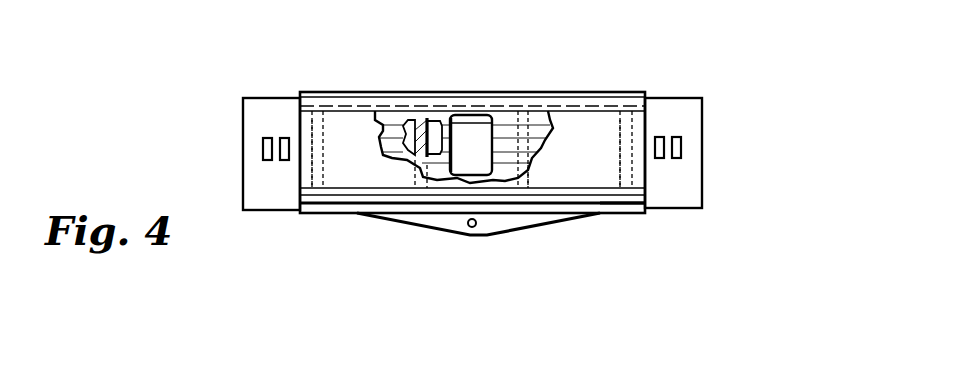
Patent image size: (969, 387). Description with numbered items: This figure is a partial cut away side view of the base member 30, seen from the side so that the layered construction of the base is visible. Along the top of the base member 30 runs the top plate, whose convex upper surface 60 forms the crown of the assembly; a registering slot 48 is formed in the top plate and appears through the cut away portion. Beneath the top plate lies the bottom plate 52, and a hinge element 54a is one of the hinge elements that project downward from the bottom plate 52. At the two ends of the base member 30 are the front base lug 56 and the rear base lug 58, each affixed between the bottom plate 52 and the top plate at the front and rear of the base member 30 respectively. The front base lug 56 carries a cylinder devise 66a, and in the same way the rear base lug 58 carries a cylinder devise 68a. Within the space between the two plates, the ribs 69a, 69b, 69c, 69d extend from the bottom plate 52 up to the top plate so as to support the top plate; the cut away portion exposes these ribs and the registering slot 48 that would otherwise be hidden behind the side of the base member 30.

The base member 30 is at (708, 91).
The registering slot 48 is at (475, 122).
The bottom plate 52 is at (620, 213).
The hinge element 54a is at (453, 237).
The front base lug 56 is at (685, 187).
The rear base lug 58 is at (268, 98).
The convex upper surface 60 is at (500, 130).
The cylinder devise 66a is at (680, 145).
The cylinder devise 68a is at (267, 143).
The rib 69a is at (325, 168).
The rib 69b is at (405, 120).
The rib 69c is at (530, 172).
The rib 69d is at (620, 133).